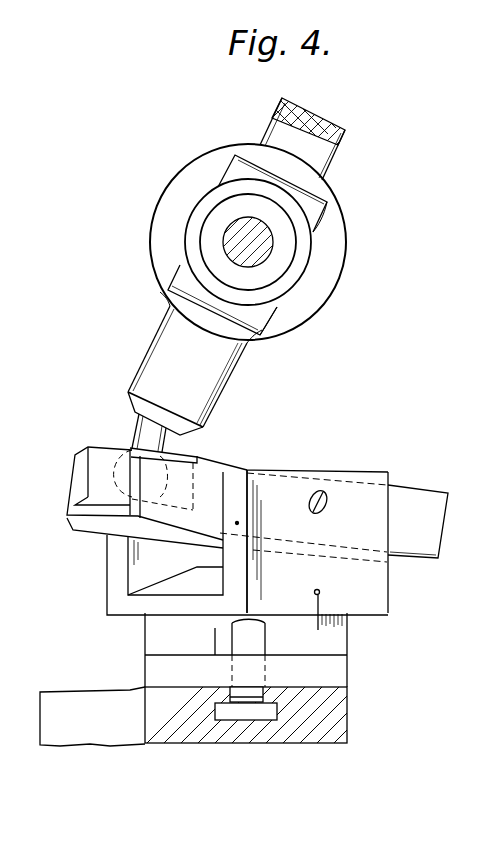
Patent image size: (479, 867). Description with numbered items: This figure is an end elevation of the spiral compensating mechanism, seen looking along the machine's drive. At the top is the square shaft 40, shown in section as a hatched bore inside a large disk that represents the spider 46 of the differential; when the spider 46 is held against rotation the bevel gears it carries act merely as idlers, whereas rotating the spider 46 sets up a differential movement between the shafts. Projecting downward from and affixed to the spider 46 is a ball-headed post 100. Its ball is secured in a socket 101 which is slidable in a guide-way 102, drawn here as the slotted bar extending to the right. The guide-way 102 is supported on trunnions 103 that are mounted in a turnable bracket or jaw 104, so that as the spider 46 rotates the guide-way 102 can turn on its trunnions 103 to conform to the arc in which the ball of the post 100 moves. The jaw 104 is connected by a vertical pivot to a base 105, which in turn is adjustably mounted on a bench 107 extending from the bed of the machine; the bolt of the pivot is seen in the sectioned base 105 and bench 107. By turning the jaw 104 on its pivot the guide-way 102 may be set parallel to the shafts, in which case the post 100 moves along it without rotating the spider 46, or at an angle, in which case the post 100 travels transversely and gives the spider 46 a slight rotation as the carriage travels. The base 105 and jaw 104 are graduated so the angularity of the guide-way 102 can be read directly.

The square shaft 40 is at (224, 237).
The spider 46 is at (150, 341).
The ball-headed post 100 is at (138, 429).
The socket 101 is at (198, 455).
The guide-way 102 is at (434, 490).
The trunnions 103 is at (326, 494).
The jaw 104 is at (304, 550).
The base 105 is at (145, 638).
The bench 107 is at (350, 707).